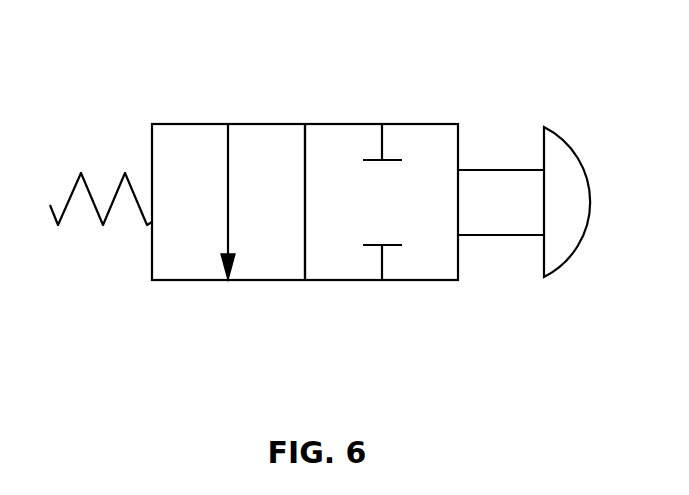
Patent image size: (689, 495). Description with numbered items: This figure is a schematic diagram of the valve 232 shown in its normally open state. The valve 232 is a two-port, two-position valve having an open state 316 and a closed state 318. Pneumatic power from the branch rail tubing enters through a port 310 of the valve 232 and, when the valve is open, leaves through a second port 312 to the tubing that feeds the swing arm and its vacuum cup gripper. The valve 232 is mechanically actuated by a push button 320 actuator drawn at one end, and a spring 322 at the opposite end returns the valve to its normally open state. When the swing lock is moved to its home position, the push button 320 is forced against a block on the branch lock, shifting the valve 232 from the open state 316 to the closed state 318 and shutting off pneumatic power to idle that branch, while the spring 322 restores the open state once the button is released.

The valve 232 is at (438, 116).
The port 310 is at (228, 124).
The second port 312 is at (230, 282).
The open state 316 is at (272, 124).
The closed state 318 is at (430, 282).
The push button 320 is at (560, 150).
The spring 322 is at (80, 172).